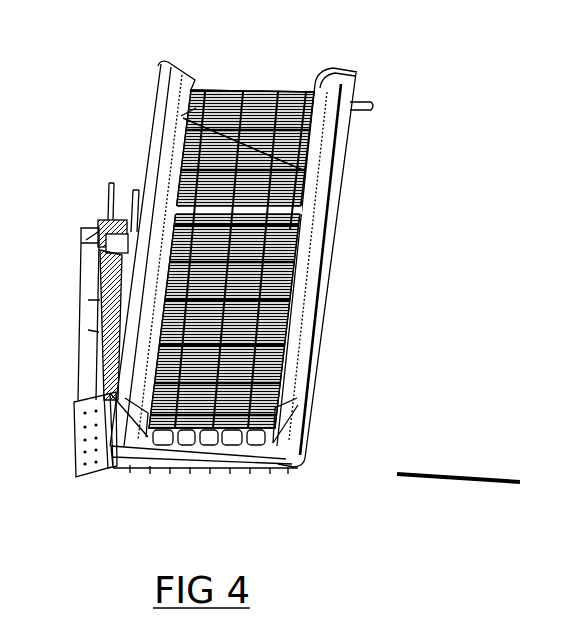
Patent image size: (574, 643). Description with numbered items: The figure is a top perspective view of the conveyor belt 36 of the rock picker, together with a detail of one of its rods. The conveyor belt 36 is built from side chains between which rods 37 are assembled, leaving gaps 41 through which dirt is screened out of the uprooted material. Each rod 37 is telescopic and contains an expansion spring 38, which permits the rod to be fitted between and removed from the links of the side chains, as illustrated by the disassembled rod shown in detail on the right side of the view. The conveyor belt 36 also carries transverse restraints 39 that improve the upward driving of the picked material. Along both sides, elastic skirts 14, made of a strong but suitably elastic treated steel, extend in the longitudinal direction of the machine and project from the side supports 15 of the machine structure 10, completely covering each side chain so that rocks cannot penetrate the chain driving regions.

The structure 10 is at (252, 288).
The skirts 14 is at (288, 92).
The side supports 15 is at (157, 160).
The conveyor belt 36 is at (160, 434).
The rods 37 is at (440, 473).
The expansion spring 38 is at (490, 483).
The transverse restraints 39 is at (288, 318).
The gaps 41 is at (262, 358).